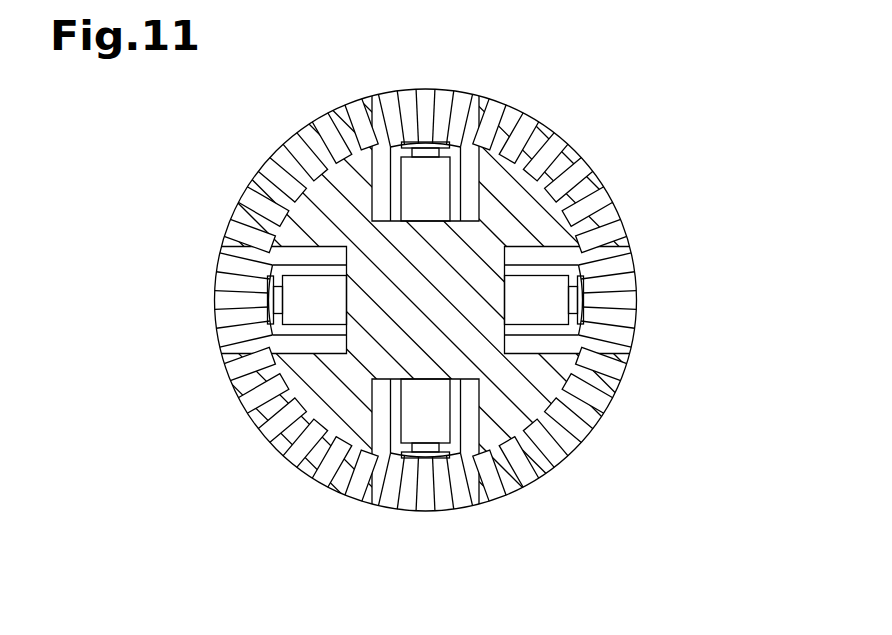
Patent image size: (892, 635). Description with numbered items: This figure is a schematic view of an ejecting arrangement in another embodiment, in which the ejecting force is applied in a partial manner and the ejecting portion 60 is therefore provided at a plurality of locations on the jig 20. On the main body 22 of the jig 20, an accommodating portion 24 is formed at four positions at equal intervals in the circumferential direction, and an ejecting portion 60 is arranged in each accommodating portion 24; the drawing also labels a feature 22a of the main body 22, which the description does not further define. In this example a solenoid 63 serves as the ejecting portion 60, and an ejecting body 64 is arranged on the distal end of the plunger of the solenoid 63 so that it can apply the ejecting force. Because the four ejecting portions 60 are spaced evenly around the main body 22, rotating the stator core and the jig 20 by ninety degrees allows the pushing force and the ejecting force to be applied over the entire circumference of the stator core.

The jig 20 is at (576, 451).
The main body 22 is at (580, 150).
The magnet insertion slot 22a is at (612, 190).
The accommodating portion 24 is at (386, 140).
The ejecting portion 60 is at (470, 197).
The solenoid 63 is at (421, 212).
The ejecting body 64 is at (438, 137).